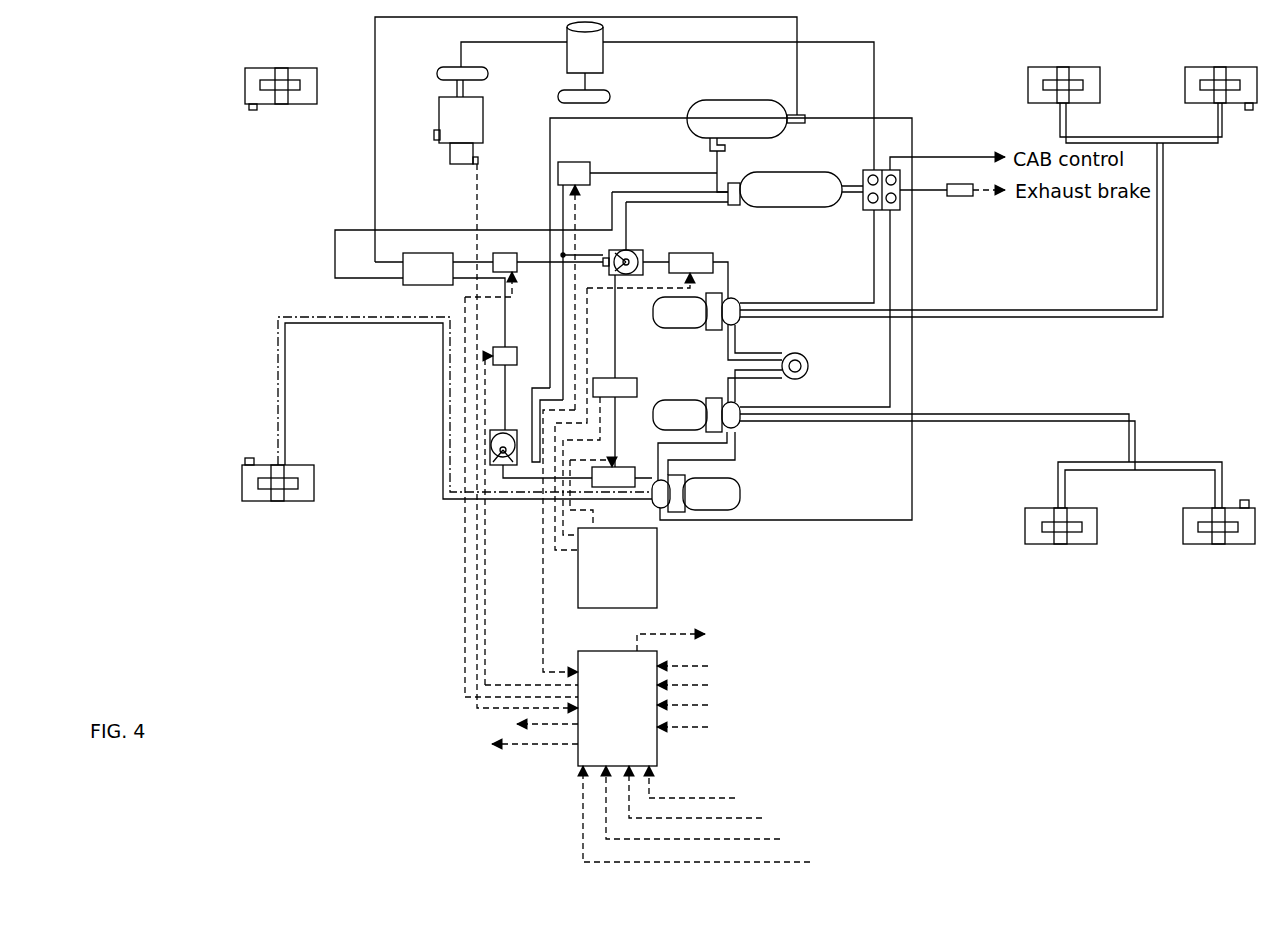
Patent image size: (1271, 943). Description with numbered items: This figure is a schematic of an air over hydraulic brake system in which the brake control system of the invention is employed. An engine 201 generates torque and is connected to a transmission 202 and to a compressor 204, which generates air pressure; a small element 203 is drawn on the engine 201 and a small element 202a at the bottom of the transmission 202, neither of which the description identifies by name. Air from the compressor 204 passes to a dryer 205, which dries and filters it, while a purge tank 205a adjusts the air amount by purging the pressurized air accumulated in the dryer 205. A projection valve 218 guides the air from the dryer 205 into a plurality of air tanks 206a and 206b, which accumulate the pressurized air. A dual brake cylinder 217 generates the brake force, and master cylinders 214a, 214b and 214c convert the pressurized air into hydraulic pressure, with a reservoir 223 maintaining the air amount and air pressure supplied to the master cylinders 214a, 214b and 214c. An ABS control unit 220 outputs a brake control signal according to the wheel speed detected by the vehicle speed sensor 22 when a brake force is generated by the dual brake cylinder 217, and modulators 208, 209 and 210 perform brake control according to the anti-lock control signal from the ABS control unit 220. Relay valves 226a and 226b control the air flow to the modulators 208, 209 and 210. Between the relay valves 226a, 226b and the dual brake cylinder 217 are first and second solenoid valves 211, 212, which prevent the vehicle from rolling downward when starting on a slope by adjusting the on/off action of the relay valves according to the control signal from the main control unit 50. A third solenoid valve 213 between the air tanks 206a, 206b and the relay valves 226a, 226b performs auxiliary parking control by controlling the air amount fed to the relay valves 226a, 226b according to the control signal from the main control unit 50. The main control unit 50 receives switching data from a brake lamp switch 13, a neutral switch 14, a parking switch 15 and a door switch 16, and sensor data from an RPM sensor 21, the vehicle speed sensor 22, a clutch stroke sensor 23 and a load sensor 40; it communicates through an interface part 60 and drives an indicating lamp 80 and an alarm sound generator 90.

The engine 201 is at (483, 115).
The transmission 202 is at (450, 160).
The pressure sensor 202a is at (478, 162).
The compressor unloader 203 is at (434, 132).
The compressor 204 is at (490, 73).
The dryer 205 is at (603, 50).
The purge tank 205a is at (610, 97).
The air tank 206a is at (720, 100).
The air tank 206b is at (800, 208).
The modulator 208 is at (700, 252).
The modulator 209 is at (638, 385).
The modulator 210 is at (617, 465).
The first solenoid valve 211 is at (505, 253).
The second solenoid valve 212 is at (515, 347).
The third solenoid valve 213 is at (590, 165).
The master cylinder 214a is at (745, 300).
The master cylinder 214b is at (745, 425).
The master cylinder 214c is at (740, 495).
The dual brake cylinder 217 is at (403, 285).
The projection valve 218 is at (865, 170).
The ABS control unit 220 is at (578, 608).
The reservoir 223 is at (810, 366).
The relay valve 226a is at (632, 248).
The relay valve 226b is at (497, 438).
The main control unit (MCU) 50 is at (578, 757).
The interface part 60 is at (686, 638).
The brake lamp switch 13 is at (697, 685).
The neutral switch 14 is at (697, 705).
The parking switch 15 is at (697, 727).
The door switch 16 is at (709, 807).
The RPM sensor 21 is at (715, 819).
The vehicle speed sensor 22 is at (709, 798).
The clutch stroke sensor 23 is at (697, 666).
The load sensor 40 is at (713, 788).
The indicating lamp 80 is at (504, 745).
The alarm sound generator 90 is at (506, 725).